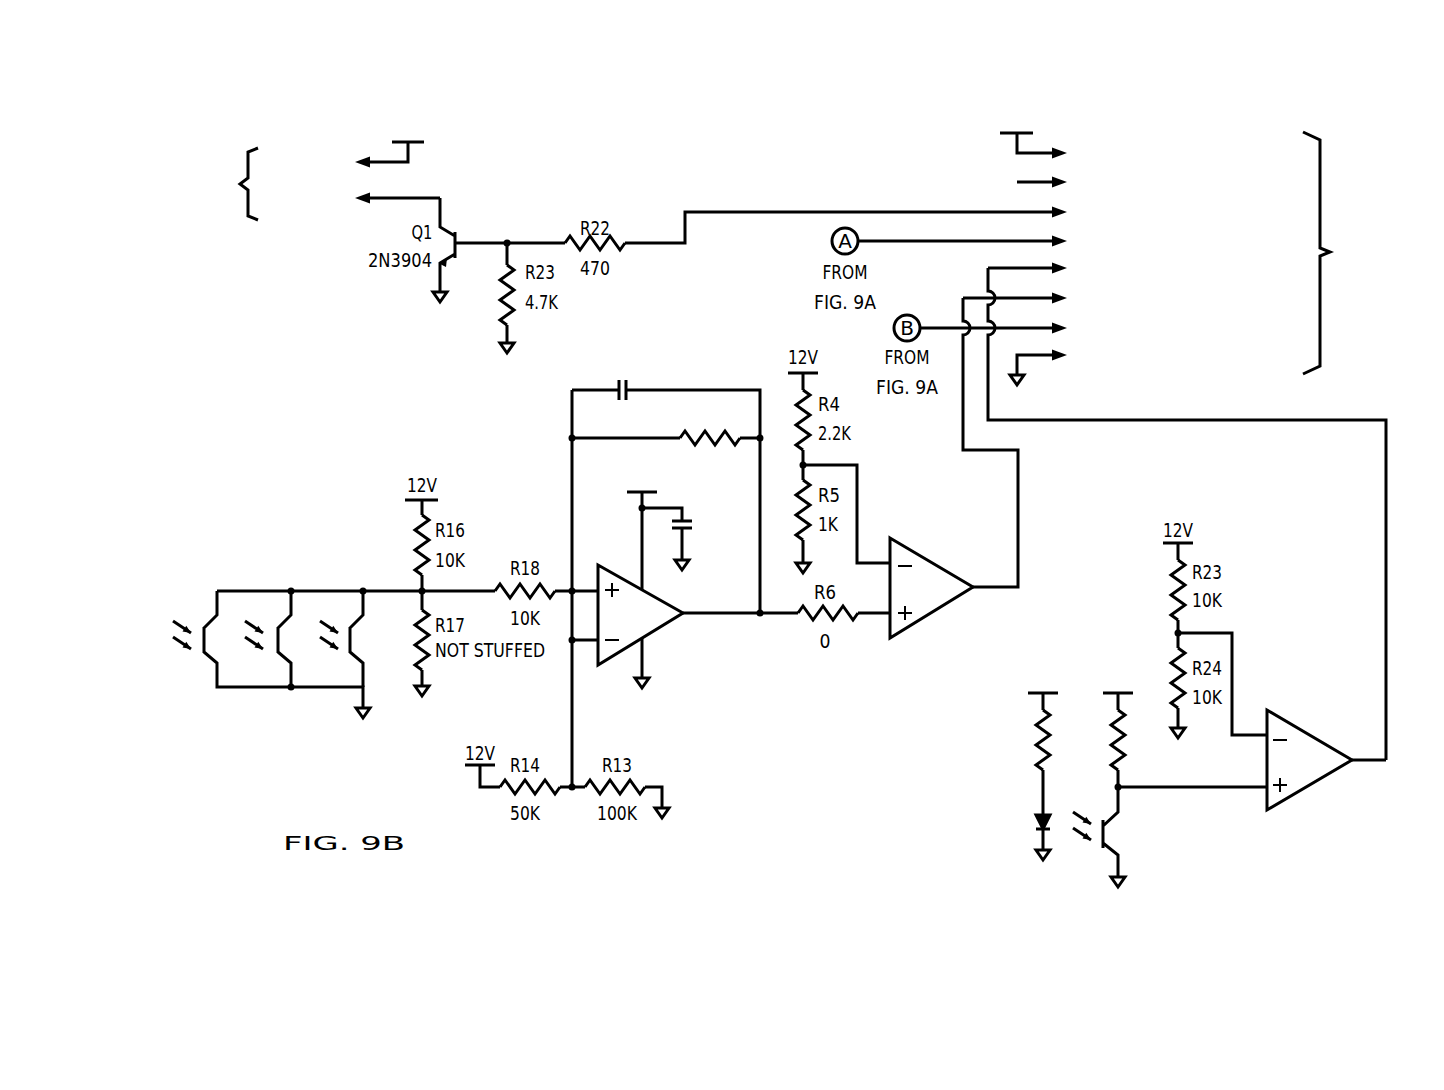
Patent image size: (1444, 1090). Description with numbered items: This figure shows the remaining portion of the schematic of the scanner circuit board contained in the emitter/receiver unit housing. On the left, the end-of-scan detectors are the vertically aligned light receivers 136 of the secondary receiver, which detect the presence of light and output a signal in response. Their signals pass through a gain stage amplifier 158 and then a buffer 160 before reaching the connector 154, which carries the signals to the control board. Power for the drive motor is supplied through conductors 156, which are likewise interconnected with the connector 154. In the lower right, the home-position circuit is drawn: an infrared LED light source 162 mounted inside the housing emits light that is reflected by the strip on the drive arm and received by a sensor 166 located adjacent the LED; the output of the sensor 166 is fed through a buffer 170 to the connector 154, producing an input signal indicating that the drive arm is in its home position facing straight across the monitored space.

The light receivers 136 is at (350, 612).
The connector 154 is at (1080, 370).
The conductors 156 is at (392, 197).
The gain stage amplifier 158 is at (685, 625).
The buffer 160 is at (890, 646).
The infrared LED light source 162 is at (1020, 845).
The sensor 166 is at (1138, 868).
The buffer 170 is at (1315, 806).